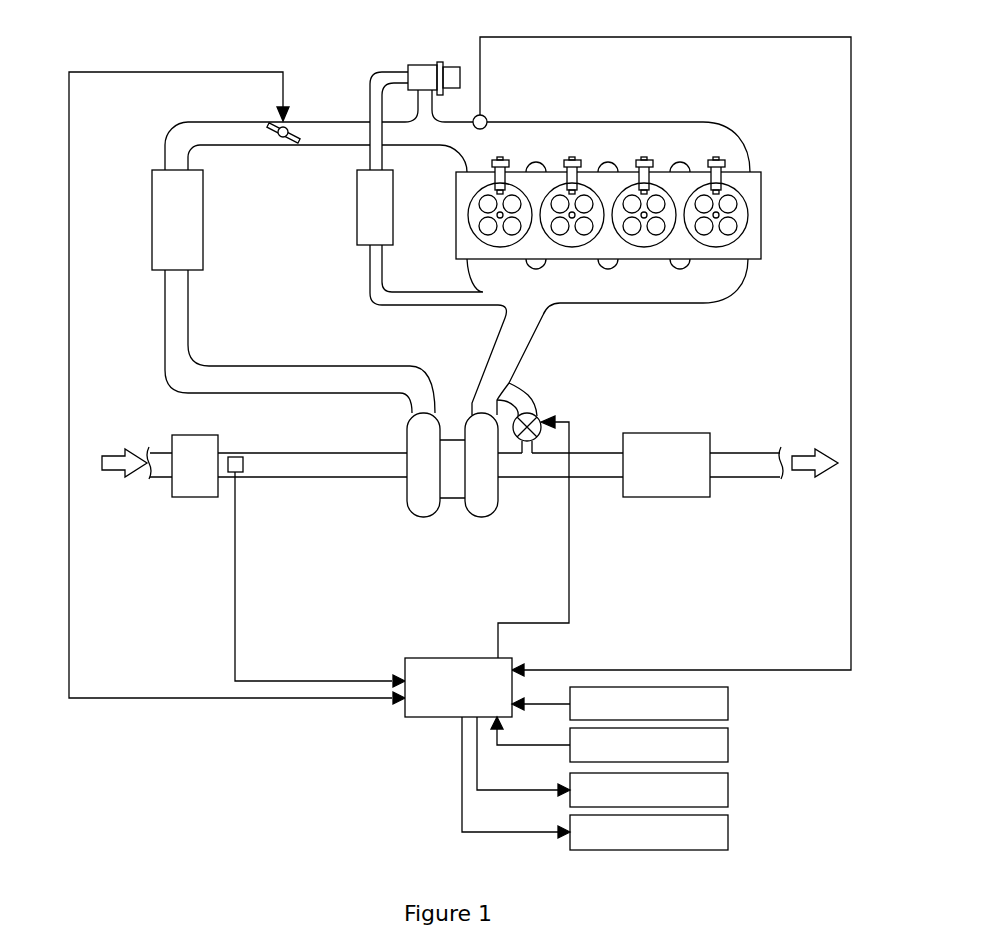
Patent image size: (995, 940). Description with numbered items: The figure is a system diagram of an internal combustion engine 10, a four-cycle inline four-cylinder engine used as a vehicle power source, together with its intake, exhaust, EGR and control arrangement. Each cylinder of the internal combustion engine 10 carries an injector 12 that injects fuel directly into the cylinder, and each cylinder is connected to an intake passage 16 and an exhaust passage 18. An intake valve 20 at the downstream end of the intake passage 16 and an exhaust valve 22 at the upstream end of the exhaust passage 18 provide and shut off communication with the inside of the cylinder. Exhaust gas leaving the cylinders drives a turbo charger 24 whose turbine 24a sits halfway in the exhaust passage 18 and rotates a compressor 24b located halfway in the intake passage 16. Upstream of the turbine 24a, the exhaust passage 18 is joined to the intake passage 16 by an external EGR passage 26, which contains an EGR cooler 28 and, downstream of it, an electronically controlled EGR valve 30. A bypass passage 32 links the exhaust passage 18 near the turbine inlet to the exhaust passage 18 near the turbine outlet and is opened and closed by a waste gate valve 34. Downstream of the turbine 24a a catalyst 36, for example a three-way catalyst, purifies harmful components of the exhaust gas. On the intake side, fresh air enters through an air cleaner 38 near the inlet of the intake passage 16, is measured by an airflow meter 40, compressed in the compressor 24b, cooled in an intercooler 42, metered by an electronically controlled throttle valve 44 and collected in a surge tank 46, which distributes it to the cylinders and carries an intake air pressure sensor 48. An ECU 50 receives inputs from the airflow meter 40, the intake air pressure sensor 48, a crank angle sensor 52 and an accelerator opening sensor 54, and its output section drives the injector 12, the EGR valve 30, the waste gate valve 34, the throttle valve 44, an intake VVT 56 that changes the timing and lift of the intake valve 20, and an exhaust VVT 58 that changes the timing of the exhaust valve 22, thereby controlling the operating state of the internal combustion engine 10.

The internal combustion engine 10 is at (769, 226).
The injector 12 is at (735, 172).
The intake passage 16 is at (313, 122).
The exhaust passage 18 is at (488, 372).
The intake valve 20 is at (705, 170).
The exhaust valve 22 is at (700, 245).
The turbo charger 24 is at (457, 525).
The turbine 24a is at (488, 502).
The compressor 24b is at (420, 519).
The external EGR passage 26 is at (373, 72).
The EGR cooler 28 is at (357, 213).
The EGR valve 30 is at (425, 65).
The bypass passage 32 is at (525, 391).
The waste gate valve 34 is at (527, 445).
The catalyst 36 is at (672, 433).
The air cleaner 38 is at (172, 437).
The airflow meter 40 is at (236, 456).
The intercooler 42 is at (204, 229).
The throttle valve 44 is at (272, 118).
The surge tank 46 is at (628, 121).
The intake air pressure sensor 48 is at (487, 116).
The ECU 50 is at (433, 718).
The crank angle sensor 52 is at (730, 705).
The accelerator opening sensor 54 is at (730, 746).
The intake VVT 56 is at (730, 790).
The exhaust VVT 58 is at (730, 832).